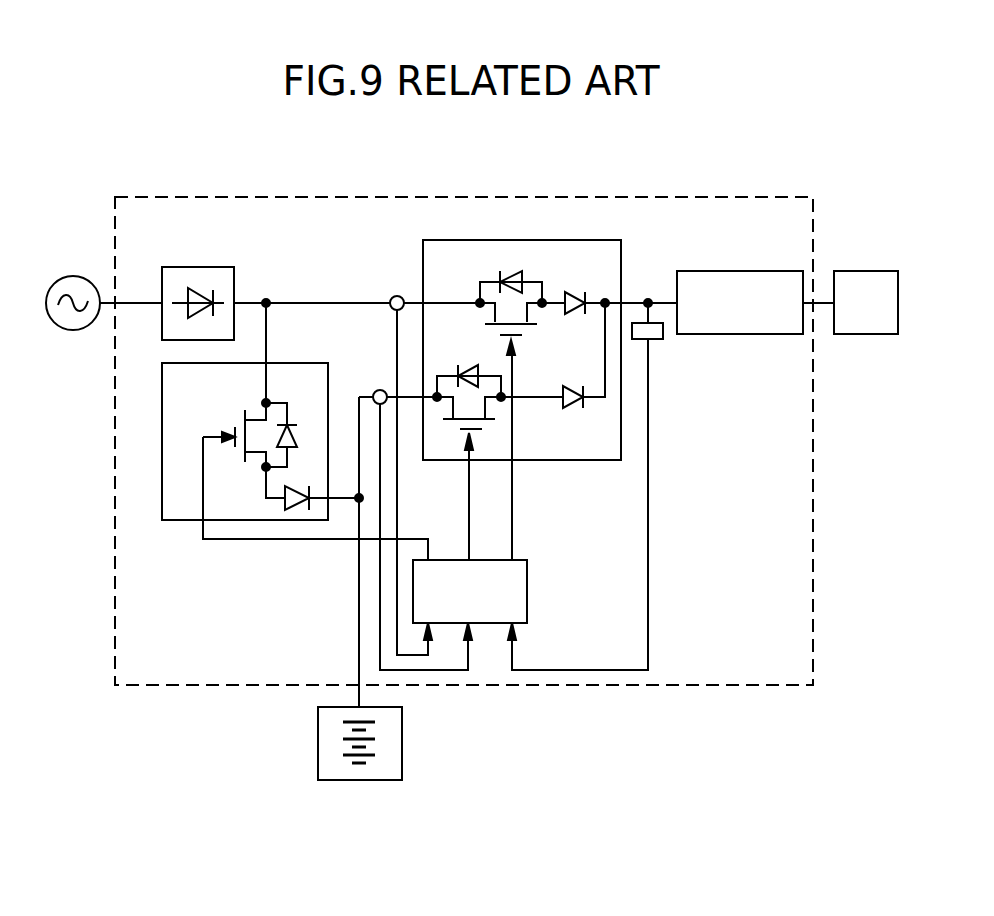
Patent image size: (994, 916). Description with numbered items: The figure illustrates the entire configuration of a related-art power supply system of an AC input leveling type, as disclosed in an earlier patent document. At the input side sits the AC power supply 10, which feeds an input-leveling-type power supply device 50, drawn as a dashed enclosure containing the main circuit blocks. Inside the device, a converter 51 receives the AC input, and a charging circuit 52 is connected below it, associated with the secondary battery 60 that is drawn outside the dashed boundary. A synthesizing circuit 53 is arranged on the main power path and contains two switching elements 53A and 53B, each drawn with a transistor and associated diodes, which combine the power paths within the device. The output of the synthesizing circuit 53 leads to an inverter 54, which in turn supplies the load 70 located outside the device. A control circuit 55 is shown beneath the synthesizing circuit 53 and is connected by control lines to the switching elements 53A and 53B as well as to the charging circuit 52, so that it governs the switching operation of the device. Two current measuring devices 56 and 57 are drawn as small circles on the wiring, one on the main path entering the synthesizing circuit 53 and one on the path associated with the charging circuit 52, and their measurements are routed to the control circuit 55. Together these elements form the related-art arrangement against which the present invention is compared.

The AC power supply 10 is at (72, 284).
The input-leveling-type power supply device 50 is at (299, 196).
The converter 51 is at (190, 275).
The charging circuit 52 is at (178, 513).
The synthesizing circuit 53 is at (438, 259).
The switching element 53A is at (540, 315).
The switching element 53B is at (448, 410).
The inverter 54 is at (733, 280).
The control circuit 55 is at (520, 590).
The current measuring device 56 is at (393, 295).
The current measuring device 57 is at (383, 389).
The secondary battery 60 is at (322, 745).
The load 70 is at (862, 278).